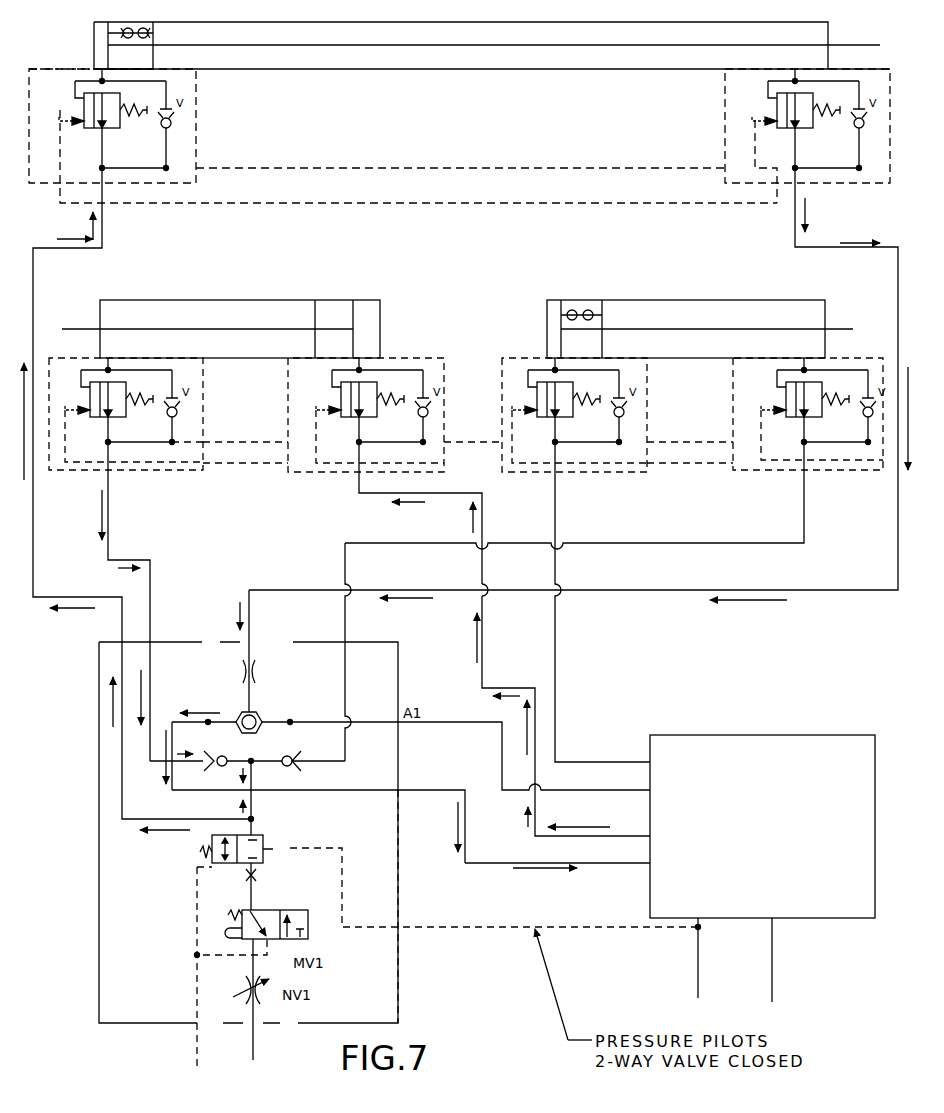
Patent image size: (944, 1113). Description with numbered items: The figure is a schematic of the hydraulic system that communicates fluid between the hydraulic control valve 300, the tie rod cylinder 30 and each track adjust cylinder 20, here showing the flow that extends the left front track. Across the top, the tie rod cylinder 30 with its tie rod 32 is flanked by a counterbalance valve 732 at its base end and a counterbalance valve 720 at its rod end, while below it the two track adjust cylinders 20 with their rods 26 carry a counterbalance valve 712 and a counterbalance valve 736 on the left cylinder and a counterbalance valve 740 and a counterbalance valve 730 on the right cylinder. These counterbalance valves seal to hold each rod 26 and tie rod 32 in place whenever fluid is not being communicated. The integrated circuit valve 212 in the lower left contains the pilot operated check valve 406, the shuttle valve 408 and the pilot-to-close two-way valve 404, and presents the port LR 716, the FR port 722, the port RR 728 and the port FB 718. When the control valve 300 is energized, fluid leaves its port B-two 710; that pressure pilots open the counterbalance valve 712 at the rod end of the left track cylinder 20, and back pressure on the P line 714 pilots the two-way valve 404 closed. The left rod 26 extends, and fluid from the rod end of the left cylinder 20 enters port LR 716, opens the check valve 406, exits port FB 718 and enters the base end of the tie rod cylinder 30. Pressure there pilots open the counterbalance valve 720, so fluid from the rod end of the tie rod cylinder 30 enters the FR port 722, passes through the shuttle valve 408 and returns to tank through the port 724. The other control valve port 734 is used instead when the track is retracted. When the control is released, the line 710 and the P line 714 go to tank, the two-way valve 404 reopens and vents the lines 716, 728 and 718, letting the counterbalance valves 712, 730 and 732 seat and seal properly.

The track adjust cylinder 20 is at (200, 300).
The rod 26 is at (78, 328).
The tie rod cylinder 30 is at (452, 70).
The tie rod 32 is at (842, 45).
The integrated circuit valve 212 is at (402, 995).
The hydraulic control valve 300 is at (747, 733).
The pilot-to-close two-way valve 404 is at (263, 833).
The pilot operated check valve 406 is at (227, 757).
The shuttle valve 408 is at (242, 712).
The port B2 710 is at (643, 830).
The counterbalance valve LV1 712 is at (180, 474).
The P line 714 is at (700, 952).
The port LR 716 is at (152, 620).
The port FB 718 is at (120, 615).
The counterbalance valve LV6 720 is at (723, 90).
The FR port 722 is at (250, 633).
The port A2 724 is at (408, 793).
The port RR 728 is at (345, 623).
The counterbalance valve LV4 730 is at (753, 473).
The counterbalance valve LV5 732 is at (197, 88).
The port A2 734 is at (637, 865).
The counterbalance valve LV2 736 is at (315, 474).
The counterbalance valve 740 is at (618, 474).